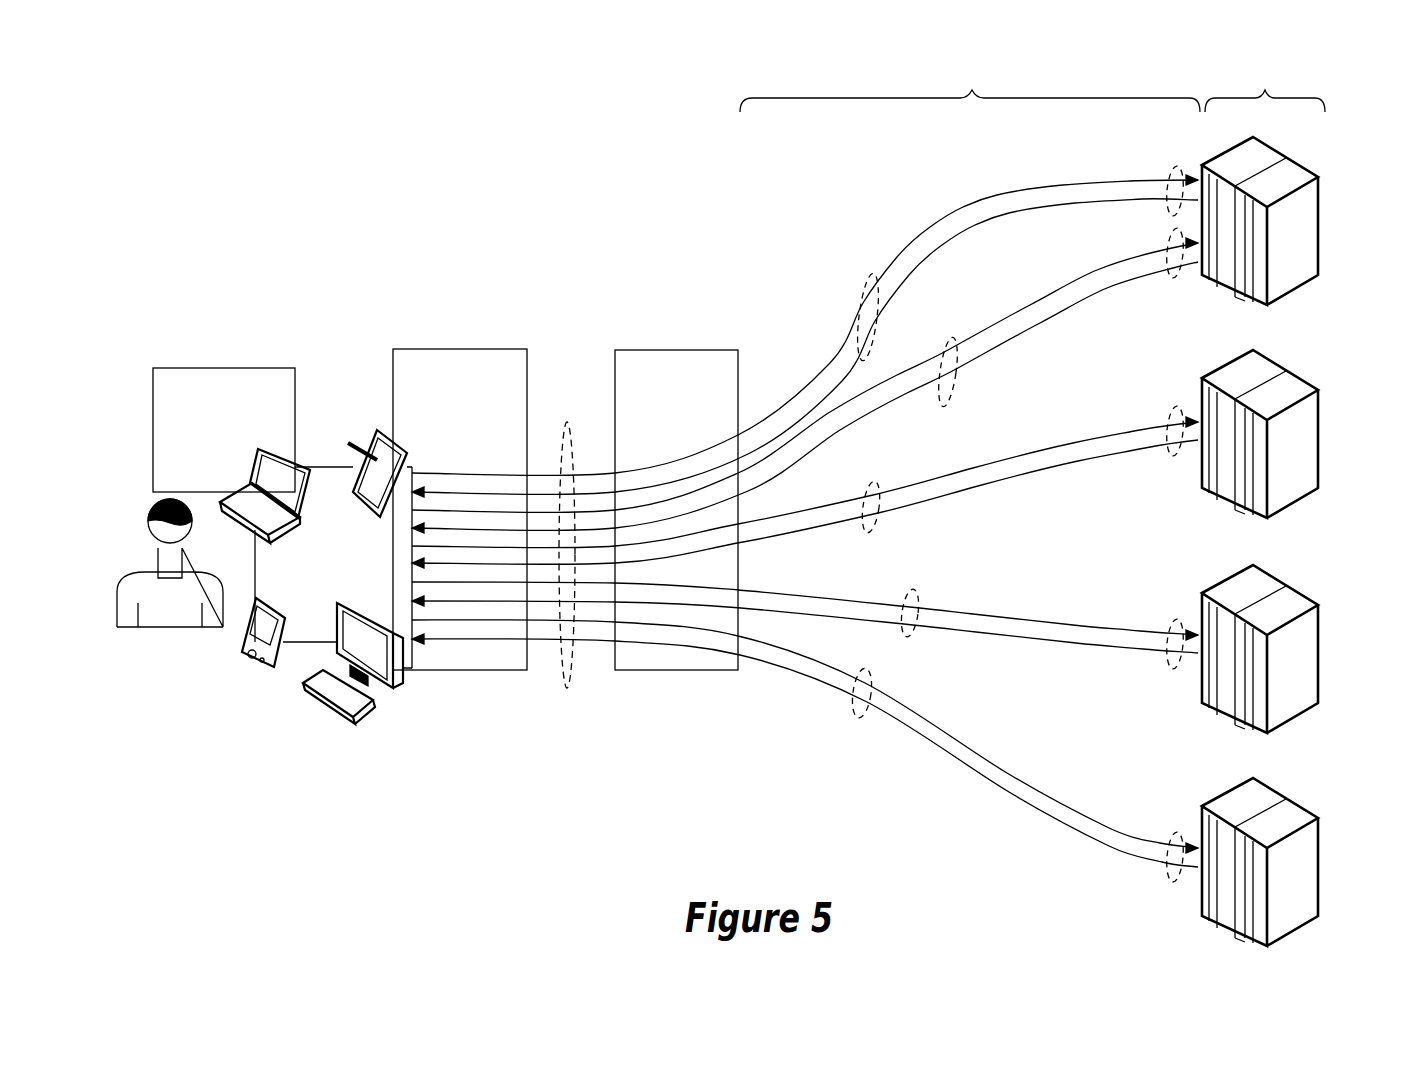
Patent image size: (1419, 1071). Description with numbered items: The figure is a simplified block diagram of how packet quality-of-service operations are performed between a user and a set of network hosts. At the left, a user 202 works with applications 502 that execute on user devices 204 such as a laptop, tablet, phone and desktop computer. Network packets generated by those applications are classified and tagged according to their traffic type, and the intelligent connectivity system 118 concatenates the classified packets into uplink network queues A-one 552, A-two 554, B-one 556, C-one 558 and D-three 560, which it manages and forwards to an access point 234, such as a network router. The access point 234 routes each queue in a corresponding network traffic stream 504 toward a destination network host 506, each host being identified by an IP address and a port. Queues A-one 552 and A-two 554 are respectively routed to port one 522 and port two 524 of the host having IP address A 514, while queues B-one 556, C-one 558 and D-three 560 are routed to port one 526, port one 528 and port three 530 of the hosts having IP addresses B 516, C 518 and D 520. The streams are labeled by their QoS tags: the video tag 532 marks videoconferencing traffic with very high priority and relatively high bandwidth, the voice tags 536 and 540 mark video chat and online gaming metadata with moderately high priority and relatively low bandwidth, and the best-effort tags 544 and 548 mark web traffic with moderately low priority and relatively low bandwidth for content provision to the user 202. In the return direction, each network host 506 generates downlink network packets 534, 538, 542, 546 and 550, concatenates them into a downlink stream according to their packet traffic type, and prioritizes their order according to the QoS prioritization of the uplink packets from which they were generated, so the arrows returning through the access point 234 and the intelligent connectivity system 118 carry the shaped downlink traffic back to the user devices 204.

The user 202 is at (145, 630).
The application 502 is at (224, 430).
The user device 204 is at (316, 577).
The intelligent connectivity system 118 is at (460, 509).
The access point 234 is at (676, 510).
The network traffic stream 504 is at (563, 675).
The network host 506 is at (1265, 92).
The IP address 'A' 514 is at (1318, 165).
The IP address 'B' 516 is at (1318, 378).
The IP address 'C' 518 is at (1318, 593).
The IP address 'D' 520 is at (1318, 806).
The port '1' 522 is at (1168, 173).
The port '2' 524 is at (1170, 275).
The port '1' 526 is at (1170, 457).
The port '1' 528 is at (1170, 657).
The port '3' 530 is at (1168, 870).
The QoS tag '1(VI)' 532 is at (977, 210).
The downlink network packets 534 is at (1007, 218).
The QoS tag '2(VO)' 536 is at (1007, 312).
The downlink network packets 538 is at (970, 360).
The QoS tag '2(VO)' 540 is at (1145, 430).
The downlink network packets 542 is at (1007, 483).
The QoS tag '0(BE)' 544 is at (1040, 620).
The downlink network packets 546 is at (987, 637).
The QoS tag '0(BE)' 548 is at (1043, 793).
The downlink network packets 550 is at (1007, 800).
The queue 'A1' 552 is at (862, 278).
The queue 'A2' 554 is at (940, 400).
The queue 'B1' 556 is at (870, 527).
The queue 'C1' 558 is at (913, 597).
The queue 'D3' 560 is at (860, 712).